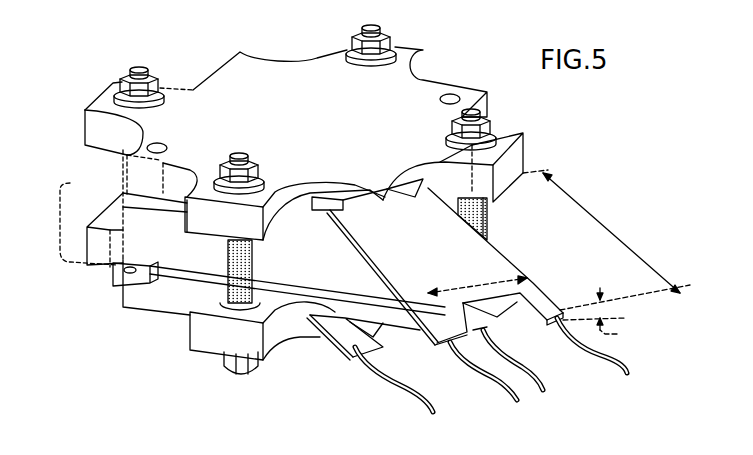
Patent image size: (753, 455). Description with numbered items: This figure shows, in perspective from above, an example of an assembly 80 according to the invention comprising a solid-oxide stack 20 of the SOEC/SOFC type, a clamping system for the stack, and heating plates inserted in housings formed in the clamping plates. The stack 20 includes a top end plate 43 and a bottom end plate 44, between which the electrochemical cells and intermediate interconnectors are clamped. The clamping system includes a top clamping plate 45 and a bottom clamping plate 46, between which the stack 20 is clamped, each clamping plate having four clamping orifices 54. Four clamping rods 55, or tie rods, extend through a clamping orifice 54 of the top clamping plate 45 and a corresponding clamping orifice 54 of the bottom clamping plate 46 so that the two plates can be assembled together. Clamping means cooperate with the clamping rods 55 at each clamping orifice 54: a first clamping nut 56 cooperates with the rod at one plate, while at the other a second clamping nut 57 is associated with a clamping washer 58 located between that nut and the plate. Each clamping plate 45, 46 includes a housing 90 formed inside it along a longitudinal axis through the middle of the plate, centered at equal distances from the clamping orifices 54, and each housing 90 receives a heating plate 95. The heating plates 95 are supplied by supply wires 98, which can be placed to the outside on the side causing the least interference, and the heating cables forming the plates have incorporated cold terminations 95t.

The assembly 80 is at (90, 57).
The top clamping plate 45 is at (193, 90).
The second clamping nut 57 is at (388, 44).
The clamping washer 58 is at (345, 50).
The solid-oxide stack 20 is at (57, 222).
The top end plate 43 is at (137, 193).
The bottom end plate 44 is at (165, 272).
The clamping orifice 54 is at (253, 287).
The bottom clamping plate 46 is at (190, 340).
The first clamping nut 56 is at (240, 380).
The housing 90 is at (325, 205).
The clamping rod 55 is at (490, 228).
The heating plate 95 is at (446, 258).
The cold termination 95t is at (548, 298).
The supply wire 98 is at (515, 398).